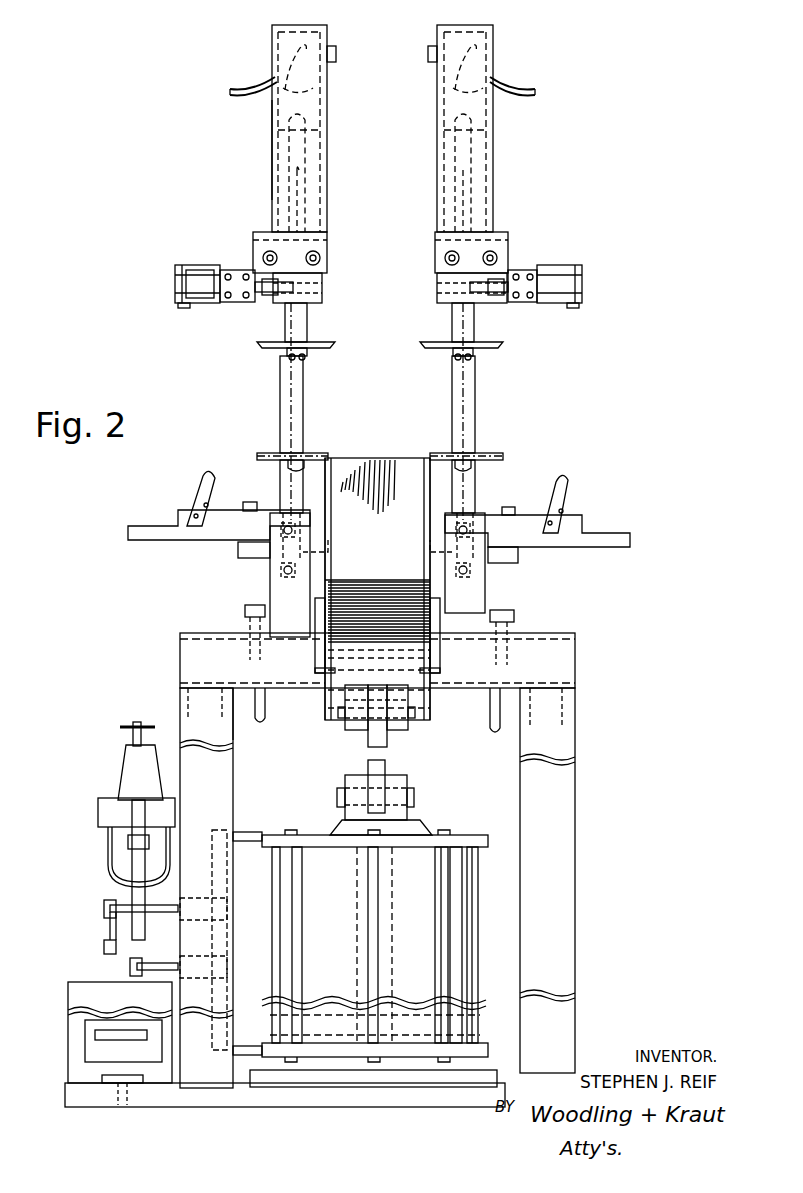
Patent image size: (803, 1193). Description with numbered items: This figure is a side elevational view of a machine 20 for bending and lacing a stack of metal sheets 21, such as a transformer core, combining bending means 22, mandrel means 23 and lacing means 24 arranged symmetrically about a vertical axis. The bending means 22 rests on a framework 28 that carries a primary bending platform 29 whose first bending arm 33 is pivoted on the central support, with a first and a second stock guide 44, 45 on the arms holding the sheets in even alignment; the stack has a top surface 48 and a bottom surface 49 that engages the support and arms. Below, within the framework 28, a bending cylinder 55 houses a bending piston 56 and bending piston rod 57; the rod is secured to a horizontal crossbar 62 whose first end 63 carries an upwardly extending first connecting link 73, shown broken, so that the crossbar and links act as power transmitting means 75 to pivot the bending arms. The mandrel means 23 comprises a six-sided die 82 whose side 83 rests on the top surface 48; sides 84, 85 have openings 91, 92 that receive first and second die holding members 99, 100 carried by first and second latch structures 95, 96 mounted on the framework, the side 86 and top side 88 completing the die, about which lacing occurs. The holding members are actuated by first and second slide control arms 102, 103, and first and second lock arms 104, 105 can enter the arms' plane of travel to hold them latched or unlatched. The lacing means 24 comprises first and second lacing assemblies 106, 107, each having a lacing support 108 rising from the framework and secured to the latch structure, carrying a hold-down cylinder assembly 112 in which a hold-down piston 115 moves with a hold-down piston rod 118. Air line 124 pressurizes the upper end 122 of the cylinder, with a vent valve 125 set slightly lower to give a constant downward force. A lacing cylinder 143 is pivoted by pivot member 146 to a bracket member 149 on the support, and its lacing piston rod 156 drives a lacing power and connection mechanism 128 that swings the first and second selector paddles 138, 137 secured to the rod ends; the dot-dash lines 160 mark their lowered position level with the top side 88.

The machine 20 is at (152, 612).
The stack of metal sheets 21 is at (418, 641).
The bending means 22 is at (285, 785).
The mandrel means 23 is at (519, 604).
The lacing means 24 is at (370, 262).
The framework 28 is at (233, 725).
The primary bending platform 29 is at (330, 684).
The first bending arm 33 is at (425, 662).
The first stock guide 44 is at (317, 624).
The second stock guide 45 is at (436, 628).
The top surface 48 is at (362, 580).
The bottom surface 49 is at (345, 640).
The bending cylinder 55 is at (470, 932).
The bending piston 56 is at (407, 1012).
The bending piston rod 57 is at (392, 896).
The crossbar 62 is at (408, 790).
The first end of crossbar 63 is at (413, 818).
The first connecting link 73 is at (386, 772).
The power transmitting means 75 is at (329, 752).
The die 82 is at (362, 472).
The side of die 83 is at (405, 581).
The side of die 84 is at (430, 496).
The side of die 85 is at (325, 496).
The side of die 86 is at (402, 475).
The top side of die 88 is at (377, 460).
The opening 91 is at (440, 548).
The opening 92 is at (316, 548).
The first latch structure 95 is at (485, 568).
The second latch structure 96 is at (270, 578).
The first die holding member 99 is at (518, 555).
The second die holding member 100 is at (238, 550).
The first slide control arm 102 is at (630, 540).
The second slide control arm 103 is at (128, 535).
The first lock arm 104 is at (560, 485).
The second lock arm 105 is at (200, 484).
The first lacing assembly 106 is at (333, 167).
The second lacing assembly 107 is at (500, 167).
The lacing support 108 is at (281, 400).
The hold-down cylinder assembly 112 is at (272, 152).
The hold-down piston 115 is at (278, 118).
The hold-down piston rod 118 is at (290, 174).
The upper end of hold-down cylinder 122 is at (284, 50).
The air line 124 is at (232, 90).
The vent valve 125 is at (333, 62).
The lacing power and connection mechanism 128 is at (224, 326).
The second selector paddle 137 is at (494, 348).
The first selector paddle 138 is at (266, 346).
The lacing cylinder 143 is at (198, 284).
The pivot member 146 is at (197, 265).
The bracket member 149 is at (256, 262).
The lacing piston rod 156 is at (262, 295).
The dot-dash lines 160 is at (281, 421).